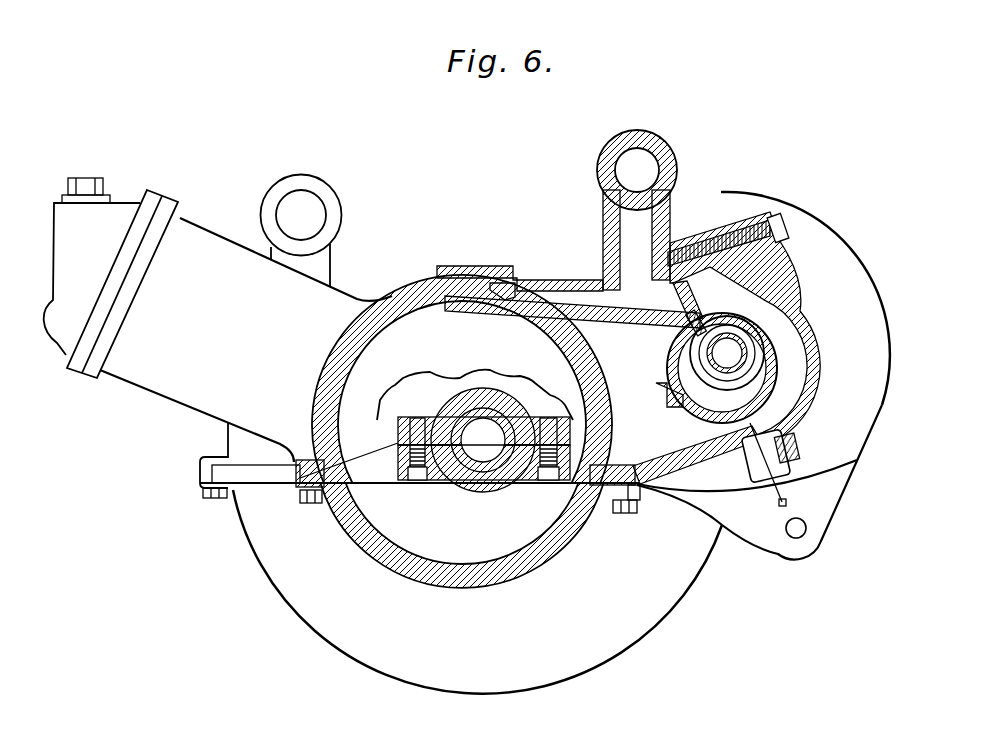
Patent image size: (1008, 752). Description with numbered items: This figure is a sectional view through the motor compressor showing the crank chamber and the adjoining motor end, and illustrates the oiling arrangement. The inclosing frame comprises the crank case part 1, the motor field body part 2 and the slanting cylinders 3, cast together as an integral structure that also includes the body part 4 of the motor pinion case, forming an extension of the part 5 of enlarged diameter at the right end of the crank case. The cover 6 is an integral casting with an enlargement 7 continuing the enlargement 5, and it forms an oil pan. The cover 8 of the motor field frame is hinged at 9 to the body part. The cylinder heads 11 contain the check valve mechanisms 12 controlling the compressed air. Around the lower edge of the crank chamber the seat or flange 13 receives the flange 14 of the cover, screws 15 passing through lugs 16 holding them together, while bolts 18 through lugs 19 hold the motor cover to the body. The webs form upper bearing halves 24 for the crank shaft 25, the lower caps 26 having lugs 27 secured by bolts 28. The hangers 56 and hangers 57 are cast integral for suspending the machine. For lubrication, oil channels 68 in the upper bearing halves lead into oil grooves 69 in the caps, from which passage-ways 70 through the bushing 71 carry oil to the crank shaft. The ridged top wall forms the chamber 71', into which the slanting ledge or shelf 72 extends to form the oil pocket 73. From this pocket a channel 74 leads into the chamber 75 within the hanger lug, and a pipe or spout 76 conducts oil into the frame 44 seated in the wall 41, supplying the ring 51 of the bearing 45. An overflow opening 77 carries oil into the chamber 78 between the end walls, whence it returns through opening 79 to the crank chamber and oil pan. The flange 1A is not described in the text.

The crank case part 1 is at (418, 296).
The housing flange 1A is at (327, 490).
The motor field body part 2 is at (737, 500).
The cylinders 3 is at (153, 367).
The body part of the motor pinion case 4 is at (728, 354).
The part of enlarged diameter 5 is at (258, 455).
The cover 6 is at (520, 580).
The enlargement 7 is at (645, 617).
The cover of the motor field frame 8 is at (860, 282).
The hinge 9 is at (810, 540).
The cylinder heads 11 is at (75, 365).
The check valve mechanisms 12 is at (62, 252).
The seat or flange 13 is at (300, 480).
The flange 14 is at (773, 470).
The screws 15 is at (303, 507).
The lugs 16 is at (205, 477).
The bolts 18 is at (783, 223).
The lugs 19 is at (787, 247).
The upper bearing halves 24 is at (503, 402).
The crank shaft 25 is at (475, 430).
The caps 26 is at (450, 483).
The lugs 27 is at (403, 457).
The bolts 28 is at (417, 477).
The web or wall 41 is at (825, 338).
The frames 44 is at (745, 370).
The bearing 45 is at (740, 380).
The rings 51 is at (787, 395).
The hangers 56 is at (300, 180).
The hangers 57 is at (677, 145).
The oil channels 68 is at (417, 420).
The oil grooves 69 is at (470, 492).
The passage-ways 70 is at (510, 485).
The bushing 71 is at (484, 399).
The chamber 71' is at (456, 212).
The ledge or shelf 72 is at (503, 283).
The oil pocket 73 is at (520, 272).
The channel 74 is at (545, 293).
The chamber 75 is at (673, 248).
The pipe or spout 76 is at (703, 328).
The overflow opening 77 is at (578, 385).
The chamber 78 is at (690, 455).
The opening 79 is at (610, 515).